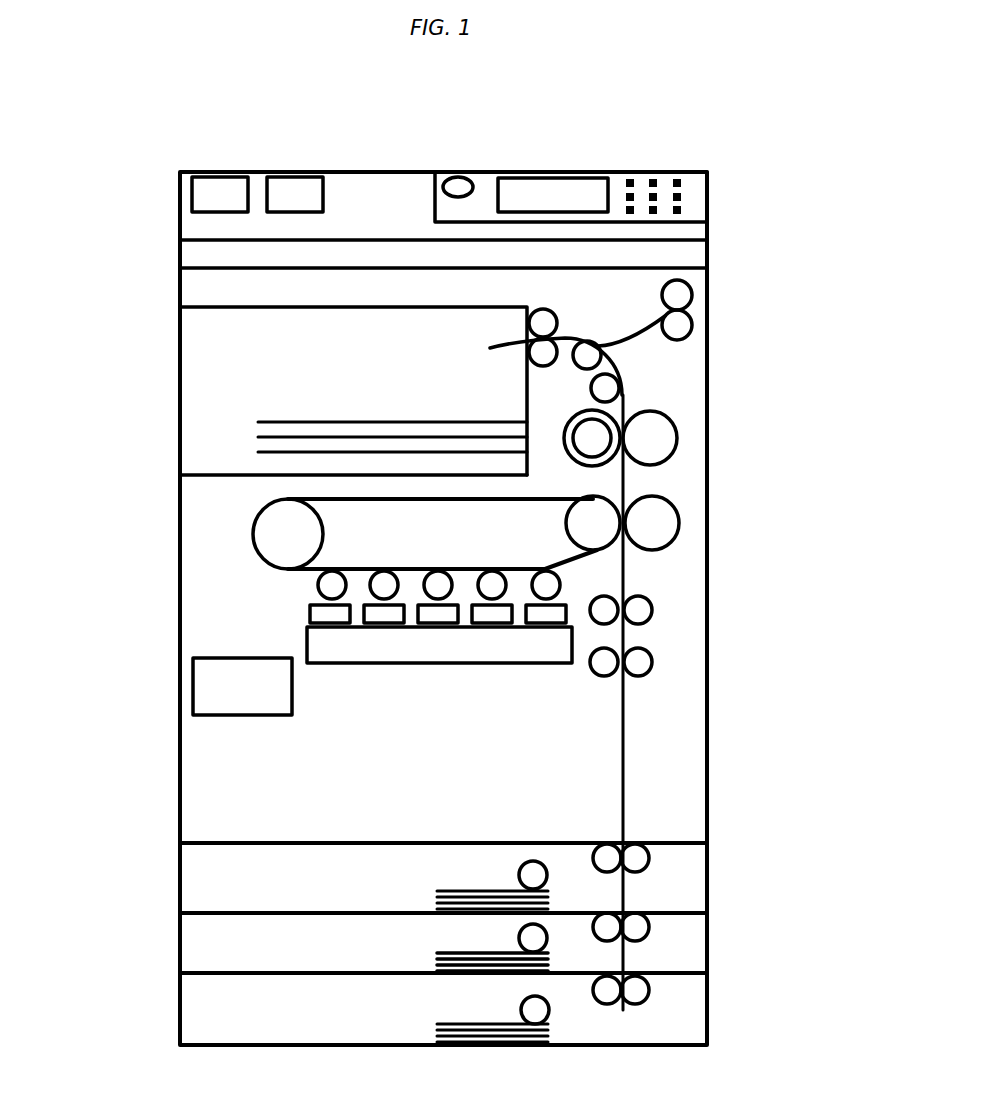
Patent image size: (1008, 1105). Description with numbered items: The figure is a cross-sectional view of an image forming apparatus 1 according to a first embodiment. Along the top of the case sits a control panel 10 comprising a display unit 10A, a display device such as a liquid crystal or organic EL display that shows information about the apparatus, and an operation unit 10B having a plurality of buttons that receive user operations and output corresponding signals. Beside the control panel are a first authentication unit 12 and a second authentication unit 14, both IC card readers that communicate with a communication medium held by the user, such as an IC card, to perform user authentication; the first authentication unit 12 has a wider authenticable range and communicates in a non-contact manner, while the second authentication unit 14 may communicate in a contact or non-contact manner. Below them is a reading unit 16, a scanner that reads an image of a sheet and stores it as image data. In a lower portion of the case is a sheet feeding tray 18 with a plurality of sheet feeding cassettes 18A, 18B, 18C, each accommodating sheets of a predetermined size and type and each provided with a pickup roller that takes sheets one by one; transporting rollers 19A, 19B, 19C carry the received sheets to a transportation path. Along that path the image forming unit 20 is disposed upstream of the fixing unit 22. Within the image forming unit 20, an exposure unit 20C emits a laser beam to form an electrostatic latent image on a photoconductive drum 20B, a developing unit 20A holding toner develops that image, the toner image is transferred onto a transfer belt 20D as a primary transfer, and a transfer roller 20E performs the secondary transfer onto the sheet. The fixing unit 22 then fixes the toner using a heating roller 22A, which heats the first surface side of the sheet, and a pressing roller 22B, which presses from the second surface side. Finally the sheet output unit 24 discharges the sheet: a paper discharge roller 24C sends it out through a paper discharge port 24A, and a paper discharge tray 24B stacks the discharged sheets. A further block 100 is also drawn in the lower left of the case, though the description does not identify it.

The image forming apparatus 1 is at (188, 138).
The control panel 10 is at (644, 171).
The display unit 10A is at (547, 190).
The operation unit 10B is at (655, 190).
The first authentication unit 12 is at (235, 190).
The second authentication unit 14 is at (315, 190).
The reading unit 16 is at (185, 243).
The sheet feeding tray 18 is at (422, 929).
The sheet feeding cassette 18A is at (520, 875).
The sheet feeding cassette 18B is at (520, 938).
The sheet feeding cassette 18C is at (522, 1005).
The transporting roller 19A is at (652, 862).
The transporting roller 19B is at (652, 930).
The transporting roller 19C is at (652, 992).
The image forming unit 20 is at (381, 635).
The developing unit 20A is at (305, 613).
The photoconductive drum 20B is at (305, 585).
The exposure unit 20C is at (466, 668).
The transfer belt 20D is at (380, 497).
The transfer roller 20E is at (633, 550).
The fixing unit 22 is at (703, 415).
The heating roller 22A is at (575, 418).
The pressing roller 22B is at (696, 428).
The sheet output unit 24 is at (342, 376).
The paper discharge port 24A is at (490, 348).
The paper discharge tray 24B is at (218, 474).
The paper discharge roller 24C is at (523, 340).
The power supply unit 100 is at (193, 687).